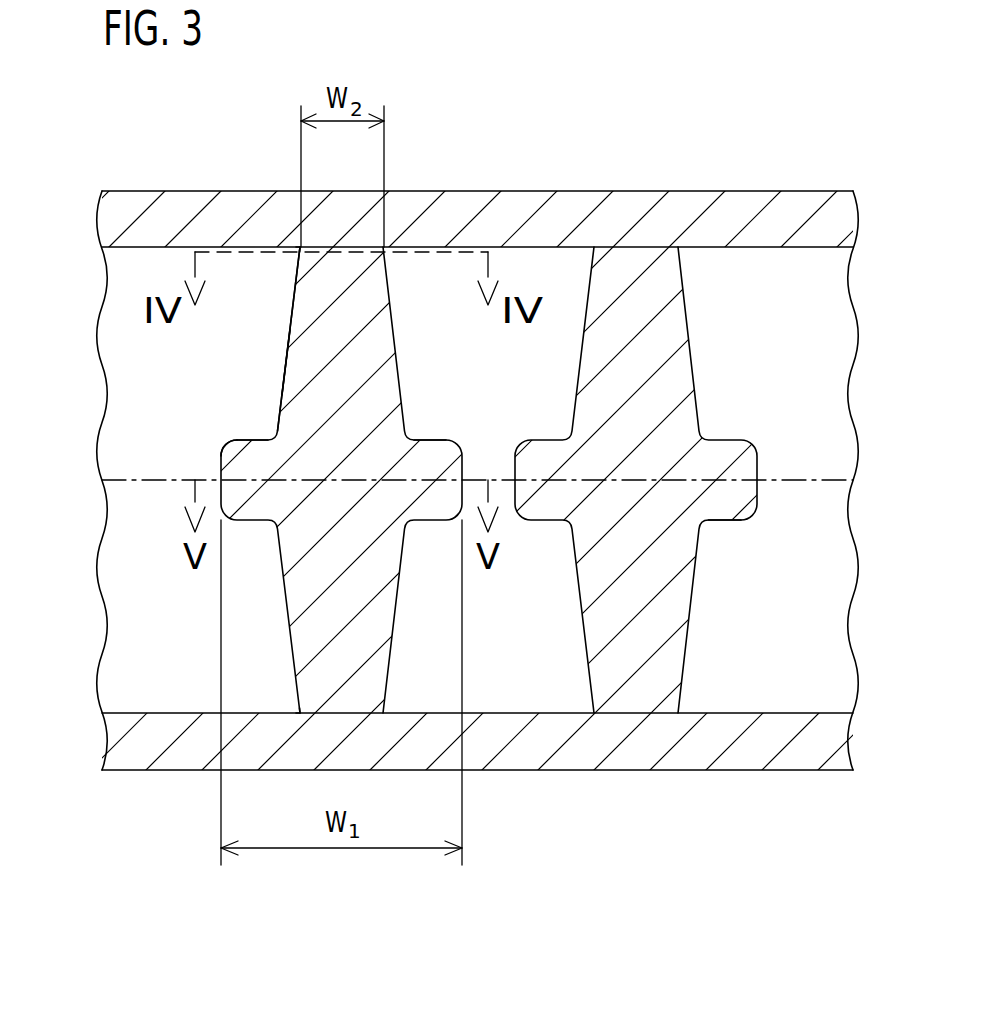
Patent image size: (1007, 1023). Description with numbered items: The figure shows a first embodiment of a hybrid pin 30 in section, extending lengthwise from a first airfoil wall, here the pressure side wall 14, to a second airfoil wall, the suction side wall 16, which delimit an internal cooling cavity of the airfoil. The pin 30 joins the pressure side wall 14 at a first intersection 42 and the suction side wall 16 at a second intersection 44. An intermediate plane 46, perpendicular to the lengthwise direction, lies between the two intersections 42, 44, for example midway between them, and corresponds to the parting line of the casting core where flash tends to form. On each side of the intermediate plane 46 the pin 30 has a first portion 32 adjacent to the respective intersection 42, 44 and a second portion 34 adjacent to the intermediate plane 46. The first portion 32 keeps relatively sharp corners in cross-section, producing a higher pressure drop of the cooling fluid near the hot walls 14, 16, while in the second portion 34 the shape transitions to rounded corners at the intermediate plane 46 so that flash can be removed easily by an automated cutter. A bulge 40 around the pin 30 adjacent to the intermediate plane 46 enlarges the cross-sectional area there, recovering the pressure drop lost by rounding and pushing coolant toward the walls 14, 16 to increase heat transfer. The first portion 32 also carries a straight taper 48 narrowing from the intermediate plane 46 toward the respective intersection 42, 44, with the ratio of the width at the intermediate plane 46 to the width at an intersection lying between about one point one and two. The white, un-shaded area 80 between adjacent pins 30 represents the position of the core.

The pressure side wall 14 is at (745, 208).
The suction side wall 16 is at (745, 752).
The hybrid pin 30 is at (355, 303).
The first portion 32 is at (314, 296).
The second portion 34 is at (354, 422).
The bulge 40 is at (222, 462).
The first intersection 42 is at (298, 252).
The second intersection 44 is at (299, 712).
The intermediate plane 46 is at (786, 480).
The taper 48 is at (284, 356).
The white area 80 is at (153, 629).